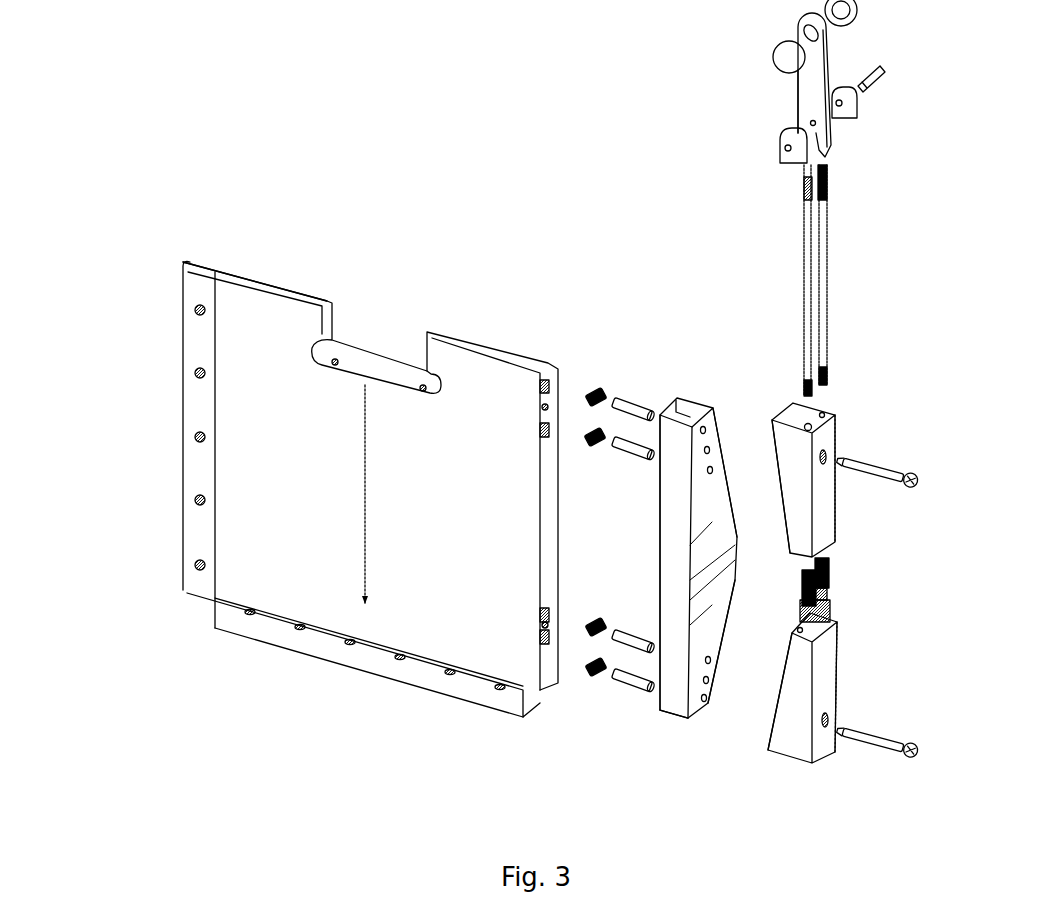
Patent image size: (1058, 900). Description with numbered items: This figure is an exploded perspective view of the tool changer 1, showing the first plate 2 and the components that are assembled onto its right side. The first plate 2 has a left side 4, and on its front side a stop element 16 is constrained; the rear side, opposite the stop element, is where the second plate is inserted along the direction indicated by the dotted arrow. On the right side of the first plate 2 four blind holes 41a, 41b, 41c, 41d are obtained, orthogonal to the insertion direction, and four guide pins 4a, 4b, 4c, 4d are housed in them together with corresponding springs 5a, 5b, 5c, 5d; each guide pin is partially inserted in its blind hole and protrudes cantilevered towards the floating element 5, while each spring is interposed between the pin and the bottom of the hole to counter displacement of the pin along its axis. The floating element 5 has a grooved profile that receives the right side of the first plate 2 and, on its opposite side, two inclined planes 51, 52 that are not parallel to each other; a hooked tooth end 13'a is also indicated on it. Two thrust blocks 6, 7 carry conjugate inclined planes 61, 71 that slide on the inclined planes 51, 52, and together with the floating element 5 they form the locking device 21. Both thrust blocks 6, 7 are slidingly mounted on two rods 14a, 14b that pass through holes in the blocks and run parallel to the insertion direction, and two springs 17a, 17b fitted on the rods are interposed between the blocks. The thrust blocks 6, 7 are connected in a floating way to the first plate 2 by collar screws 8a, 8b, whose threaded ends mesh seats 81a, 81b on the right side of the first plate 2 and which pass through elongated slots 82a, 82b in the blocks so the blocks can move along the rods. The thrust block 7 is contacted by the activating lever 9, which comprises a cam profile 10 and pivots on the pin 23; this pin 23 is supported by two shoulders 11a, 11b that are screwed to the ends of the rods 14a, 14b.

The tool changer 1 is at (150, 388).
The first plate 2 is at (262, 633).
The left side 4 is at (215, 470).
The stop element 16 is at (362, 663).
The blind hole 41a is at (543, 383).
The blind hole 41b is at (543, 425).
The blind hole 41c is at (543, 618).
The blind hole 41d is at (542, 648).
The seat 81a is at (548, 628).
The seat 81b is at (548, 407).
The spring 5a is at (597, 387).
The spring 5b is at (595, 447).
The spring 5c is at (600, 618).
The spring 5d is at (597, 675).
The guide pin 4a is at (647, 408).
The guide pin 4b is at (641, 455).
The guide pin 4c is at (630, 638).
The guide pin 4d is at (636, 688).
The floating element 5 is at (718, 402).
The plate edge 13'a is at (652, 489).
The inclined plane 51 is at (722, 506).
The inclined plane 52 is at (730, 622).
The locking device 21 is at (706, 775).
The rod 14a is at (810, 305).
The rod 14b is at (825, 295).
The cam profile 10 is at (825, 150).
The pin 23 is at (868, 62).
The activating lever 9 is at (806, 104).
The shoulder 11a is at (782, 136).
The shoulder 11b is at (855, 115).
The thrust block 7 is at (822, 507).
The inclined plane 71 is at (778, 498).
The slot 82b is at (840, 450).
The collar screw 8b is at (885, 472).
The spring 17b is at (833, 586).
The spring 17a is at (833, 619).
The thrust block 6 is at (825, 660).
The inclined plane 61 is at (780, 672).
The slot 82a is at (835, 755).
The collar screw 8a is at (885, 750).